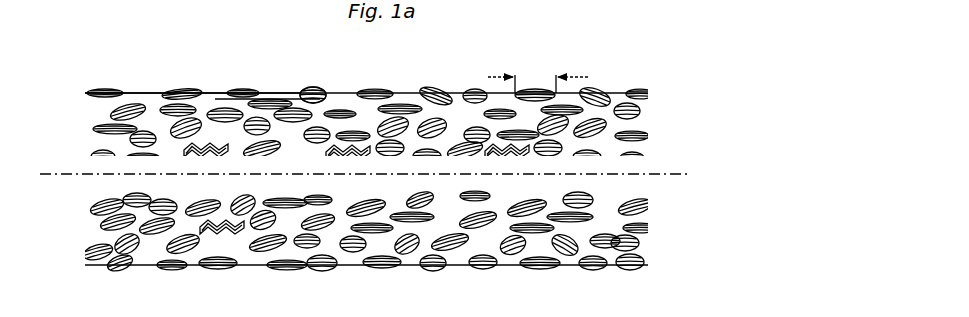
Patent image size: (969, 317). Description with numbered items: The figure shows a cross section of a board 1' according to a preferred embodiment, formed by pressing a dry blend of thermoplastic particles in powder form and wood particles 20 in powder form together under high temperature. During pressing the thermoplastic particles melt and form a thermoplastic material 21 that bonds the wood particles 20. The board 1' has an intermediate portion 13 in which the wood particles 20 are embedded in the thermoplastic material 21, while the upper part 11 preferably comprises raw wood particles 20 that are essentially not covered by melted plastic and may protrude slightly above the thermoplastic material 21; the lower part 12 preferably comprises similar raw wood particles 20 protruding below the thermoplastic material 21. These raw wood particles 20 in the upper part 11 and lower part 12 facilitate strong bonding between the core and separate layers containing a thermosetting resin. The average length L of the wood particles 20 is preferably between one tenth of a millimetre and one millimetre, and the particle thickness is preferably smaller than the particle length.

The board 1' is at (192, 59).
The upper part 11 is at (189, 86).
The lower part 12 is at (159, 270).
The intermediate portion 13 is at (84, 138).
The wood particles 20 is at (537, 90).
The thermoplastic material 21 is at (215, 99).
The average length of the wood particles L is at (547, 77).